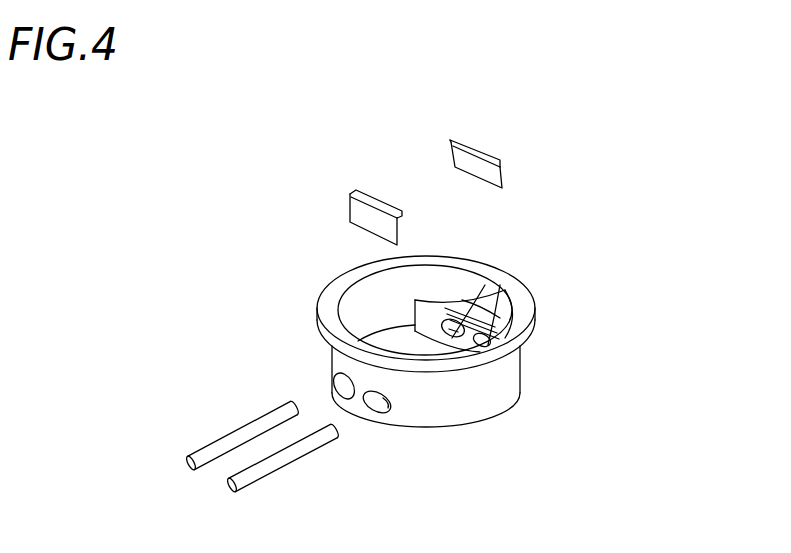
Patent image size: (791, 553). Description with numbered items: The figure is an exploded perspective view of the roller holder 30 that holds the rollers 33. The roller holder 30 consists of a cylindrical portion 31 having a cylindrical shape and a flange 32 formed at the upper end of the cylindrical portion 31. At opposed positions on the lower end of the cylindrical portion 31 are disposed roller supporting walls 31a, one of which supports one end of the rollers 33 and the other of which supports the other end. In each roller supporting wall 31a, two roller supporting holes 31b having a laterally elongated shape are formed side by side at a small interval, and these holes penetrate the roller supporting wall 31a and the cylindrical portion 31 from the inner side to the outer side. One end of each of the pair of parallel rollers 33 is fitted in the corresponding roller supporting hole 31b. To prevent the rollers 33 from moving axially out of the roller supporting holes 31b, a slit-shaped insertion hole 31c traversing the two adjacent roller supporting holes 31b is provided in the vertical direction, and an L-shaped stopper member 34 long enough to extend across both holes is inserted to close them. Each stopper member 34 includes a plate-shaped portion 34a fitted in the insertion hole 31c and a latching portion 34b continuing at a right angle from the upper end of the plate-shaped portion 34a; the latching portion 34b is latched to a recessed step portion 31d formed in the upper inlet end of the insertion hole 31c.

The roller holder 30 is at (572, 298).
The cylindrical portion 31 is at (508, 368).
The roller supporting wall 31a is at (428, 317).
The roller supporting hole 31b is at (470, 330).
The insertion hole 31c is at (500, 333).
The recessed step portion 31d is at (517, 317).
The flange 32 is at (330, 308).
The roller 33 is at (233, 437).
The stopper member 34 is at (347, 200).
The plate-shaped portion 34a is at (365, 225).
The latching portion 34b is at (368, 200).